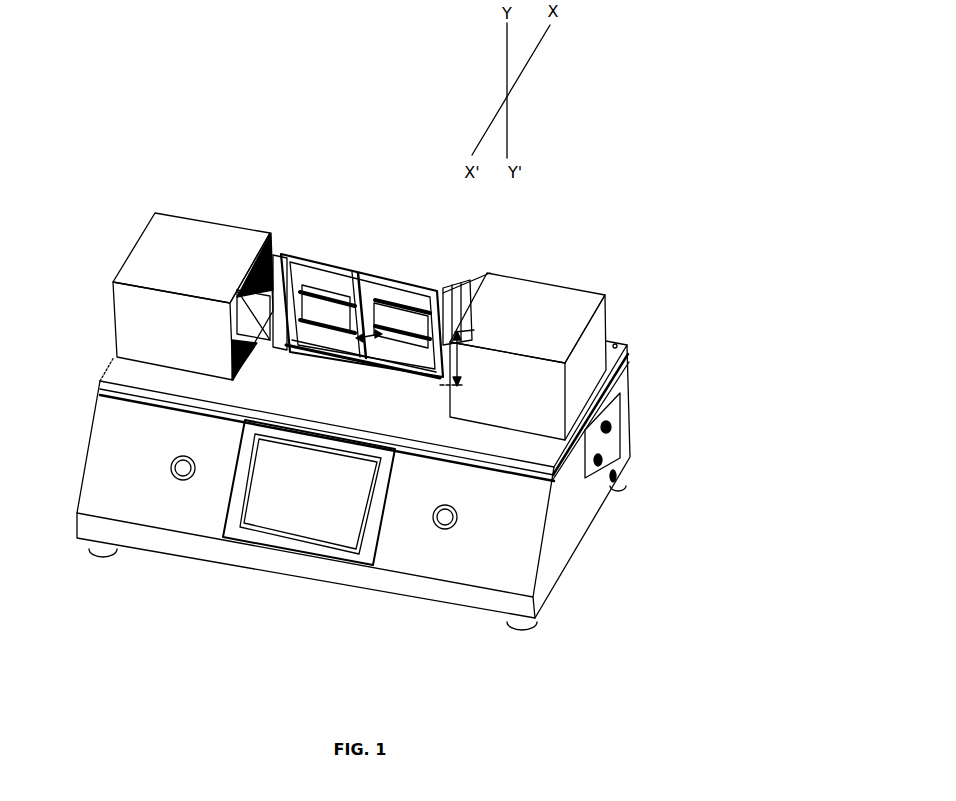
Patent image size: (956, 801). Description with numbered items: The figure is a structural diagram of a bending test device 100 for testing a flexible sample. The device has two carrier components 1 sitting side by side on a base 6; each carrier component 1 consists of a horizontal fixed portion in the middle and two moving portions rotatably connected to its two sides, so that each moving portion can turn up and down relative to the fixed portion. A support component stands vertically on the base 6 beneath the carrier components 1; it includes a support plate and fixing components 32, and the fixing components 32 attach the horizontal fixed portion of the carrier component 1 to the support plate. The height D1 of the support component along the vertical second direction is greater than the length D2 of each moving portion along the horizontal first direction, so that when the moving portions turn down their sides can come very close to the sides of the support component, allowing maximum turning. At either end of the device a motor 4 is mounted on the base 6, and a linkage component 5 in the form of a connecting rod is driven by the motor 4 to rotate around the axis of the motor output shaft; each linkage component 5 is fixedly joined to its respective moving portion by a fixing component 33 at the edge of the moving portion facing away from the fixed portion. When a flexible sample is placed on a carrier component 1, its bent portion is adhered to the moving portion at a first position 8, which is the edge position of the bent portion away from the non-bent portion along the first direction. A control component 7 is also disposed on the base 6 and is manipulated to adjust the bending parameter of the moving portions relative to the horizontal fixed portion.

The bending test device 100 is at (567, 110).
The carrier component 1 is at (232, 162).
The fixing component 32 is at (383, 272).
The fixing component 33 is at (428, 307).
The motor 4 is at (200, 270).
The linkage component 5 is at (447, 297).
The base 6 is at (553, 548).
The control component 7 is at (287, 507).
The first position 8 is at (312, 345).
The height of the support component D1 is at (466, 360).
The length of the moving portion D2 is at (372, 345).